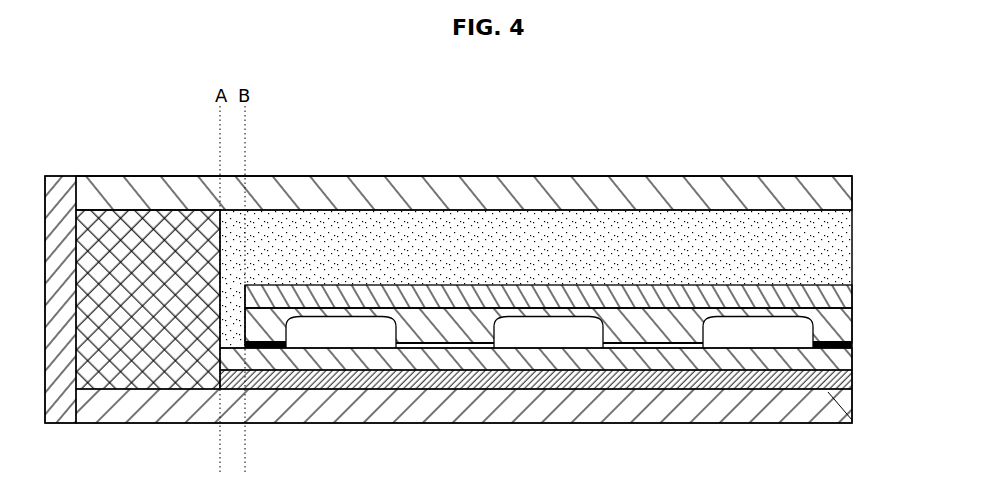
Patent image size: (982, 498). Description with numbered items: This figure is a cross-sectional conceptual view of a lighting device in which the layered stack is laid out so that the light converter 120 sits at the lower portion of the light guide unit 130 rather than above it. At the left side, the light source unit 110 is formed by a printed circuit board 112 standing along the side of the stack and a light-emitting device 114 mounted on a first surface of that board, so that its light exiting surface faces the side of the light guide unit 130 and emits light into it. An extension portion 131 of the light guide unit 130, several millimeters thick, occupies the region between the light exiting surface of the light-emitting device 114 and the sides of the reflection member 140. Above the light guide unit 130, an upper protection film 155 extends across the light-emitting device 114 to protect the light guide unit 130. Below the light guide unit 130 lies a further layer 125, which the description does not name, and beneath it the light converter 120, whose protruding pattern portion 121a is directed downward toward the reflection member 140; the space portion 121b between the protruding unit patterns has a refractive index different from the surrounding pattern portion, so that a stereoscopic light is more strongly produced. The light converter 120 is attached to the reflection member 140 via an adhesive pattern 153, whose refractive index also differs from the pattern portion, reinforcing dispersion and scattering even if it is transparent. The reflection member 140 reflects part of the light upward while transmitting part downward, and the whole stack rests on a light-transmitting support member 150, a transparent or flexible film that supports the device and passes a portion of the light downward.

The light source unit 110 is at (448, 249).
The printed circuit board 112 is at (58, 176).
The light-emitting device 114 is at (120, 208).
The extension portion 131 is at (215, 313).
The upper protection film 155 is at (853, 189).
The light guide unit 130 is at (853, 242).
The encapsulation layer 125 is at (853, 296).
The light converter 120 is at (578, 384).
The pattern portion 121a is at (640, 330).
The space portion 121b is at (737, 330).
The reflection member 140 is at (853, 349).
The light-transmitting support member 150 is at (853, 406).
The adhesive pattern 153 is at (830, 395).